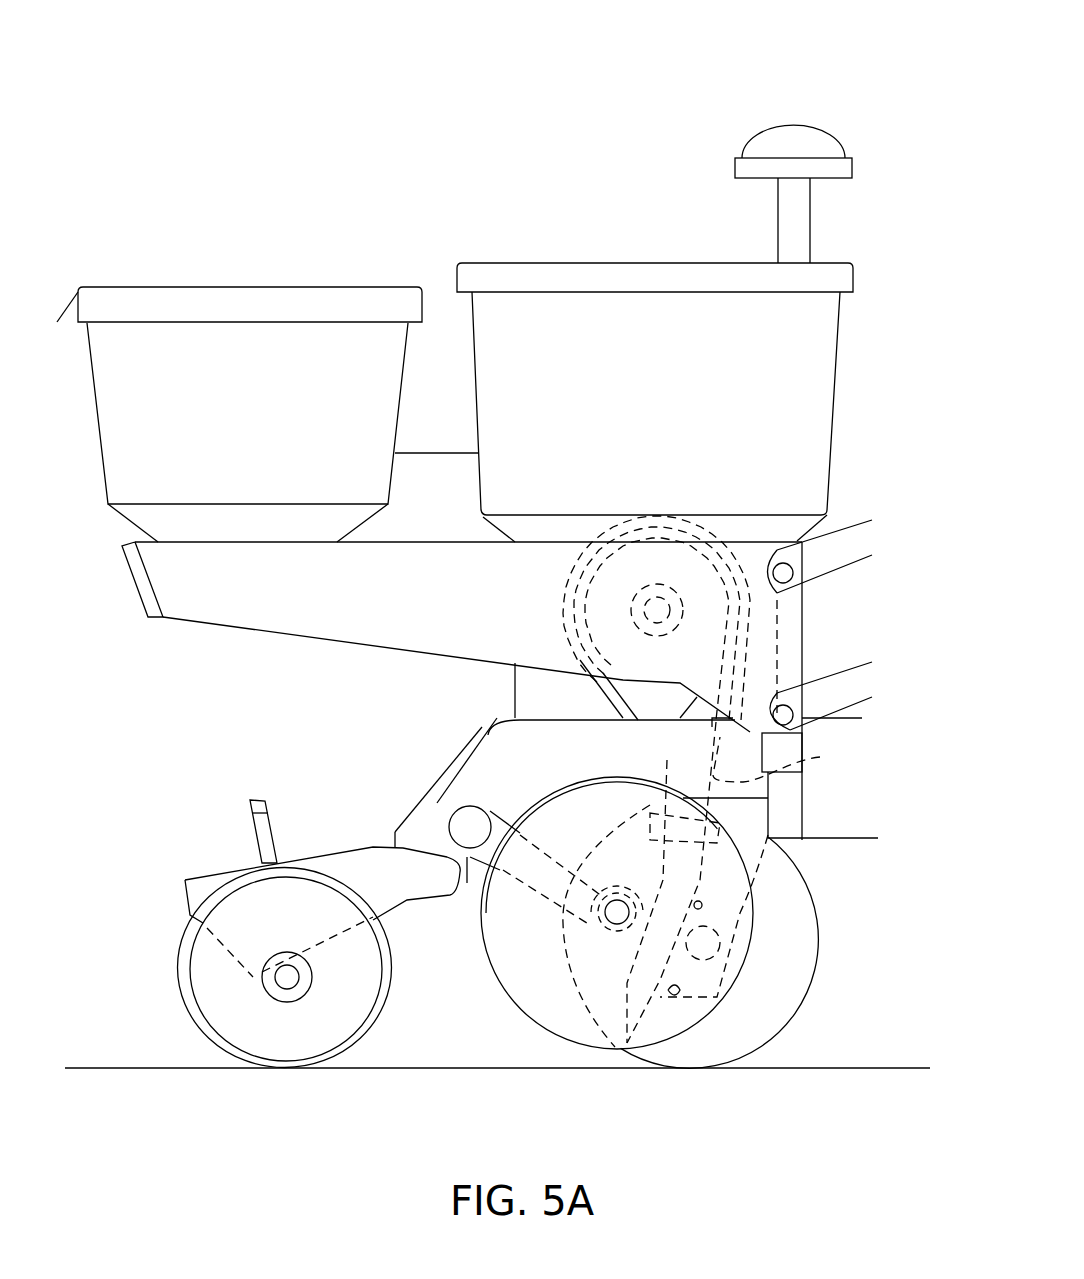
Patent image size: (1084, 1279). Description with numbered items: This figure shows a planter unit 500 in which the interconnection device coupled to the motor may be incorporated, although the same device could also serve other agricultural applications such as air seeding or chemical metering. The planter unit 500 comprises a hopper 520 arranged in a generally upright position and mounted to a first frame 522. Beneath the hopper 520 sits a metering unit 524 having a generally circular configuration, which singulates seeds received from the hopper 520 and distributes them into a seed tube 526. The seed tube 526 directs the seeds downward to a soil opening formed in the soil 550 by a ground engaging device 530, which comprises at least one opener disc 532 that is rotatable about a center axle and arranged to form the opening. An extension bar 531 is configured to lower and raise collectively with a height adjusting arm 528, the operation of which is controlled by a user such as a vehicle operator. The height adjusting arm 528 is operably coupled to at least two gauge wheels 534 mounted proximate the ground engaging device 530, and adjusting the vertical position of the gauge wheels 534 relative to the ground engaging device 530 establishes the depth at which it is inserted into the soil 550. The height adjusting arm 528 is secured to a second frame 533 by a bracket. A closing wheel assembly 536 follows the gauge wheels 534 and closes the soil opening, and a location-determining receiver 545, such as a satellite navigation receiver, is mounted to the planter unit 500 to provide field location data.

The planter unit 500 is at (658, 58).
The hopper 520 is at (525, 263).
The location-determining receiver 545 is at (775, 142).
The first frame 522 is at (235, 570).
The metering unit 524 is at (695, 643).
The extension bar 531 is at (860, 716).
The seed tube 526 is at (820, 757).
The second frame 533 is at (450, 762).
The height adjusting arm 528 is at (450, 803).
The closing wheel assembly 536 is at (217, 1047).
The gauge wheels 534 is at (547, 1027).
The opener disc 532 is at (775, 958).
The ground engaging device 530 is at (826, 906).
The soil 550 is at (825, 1058).